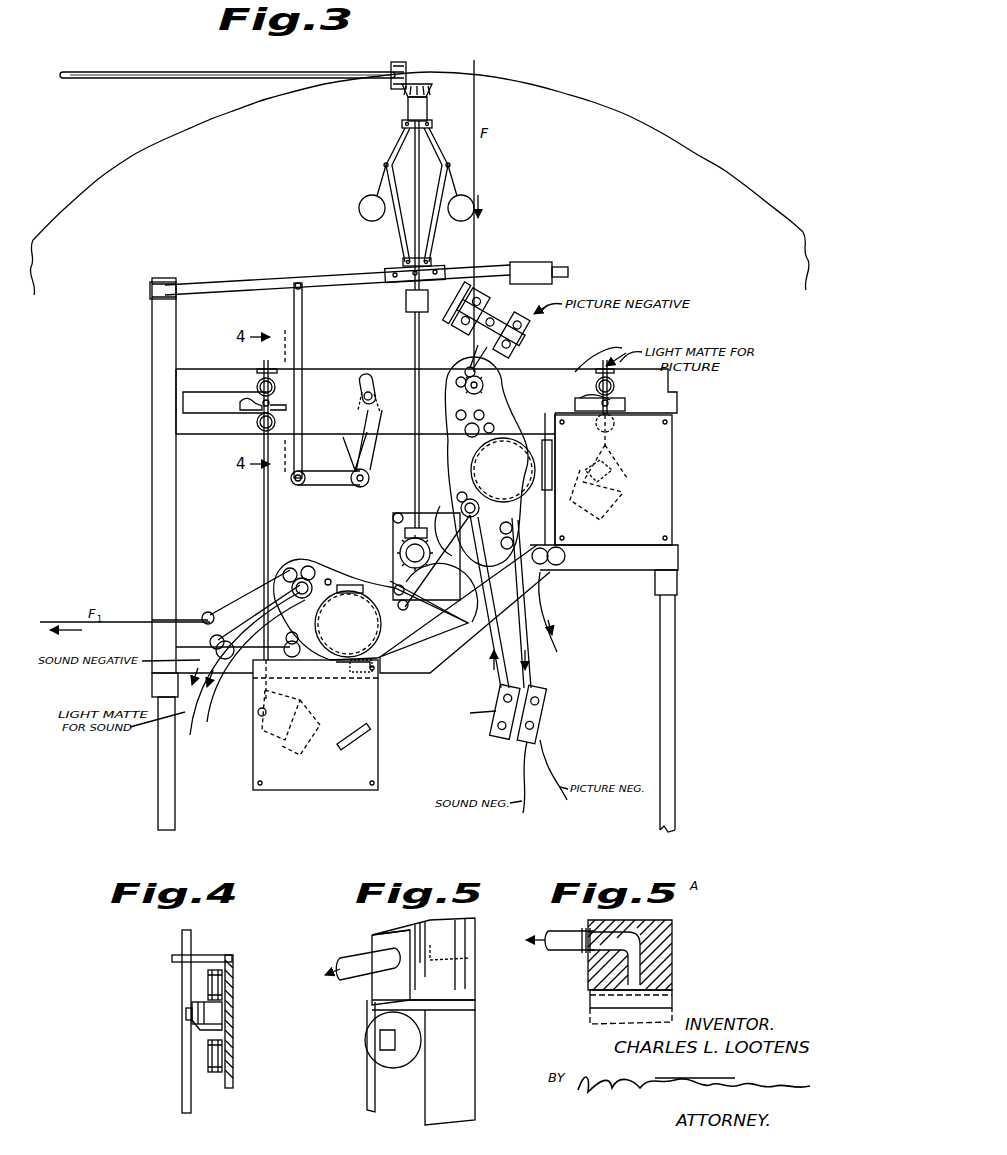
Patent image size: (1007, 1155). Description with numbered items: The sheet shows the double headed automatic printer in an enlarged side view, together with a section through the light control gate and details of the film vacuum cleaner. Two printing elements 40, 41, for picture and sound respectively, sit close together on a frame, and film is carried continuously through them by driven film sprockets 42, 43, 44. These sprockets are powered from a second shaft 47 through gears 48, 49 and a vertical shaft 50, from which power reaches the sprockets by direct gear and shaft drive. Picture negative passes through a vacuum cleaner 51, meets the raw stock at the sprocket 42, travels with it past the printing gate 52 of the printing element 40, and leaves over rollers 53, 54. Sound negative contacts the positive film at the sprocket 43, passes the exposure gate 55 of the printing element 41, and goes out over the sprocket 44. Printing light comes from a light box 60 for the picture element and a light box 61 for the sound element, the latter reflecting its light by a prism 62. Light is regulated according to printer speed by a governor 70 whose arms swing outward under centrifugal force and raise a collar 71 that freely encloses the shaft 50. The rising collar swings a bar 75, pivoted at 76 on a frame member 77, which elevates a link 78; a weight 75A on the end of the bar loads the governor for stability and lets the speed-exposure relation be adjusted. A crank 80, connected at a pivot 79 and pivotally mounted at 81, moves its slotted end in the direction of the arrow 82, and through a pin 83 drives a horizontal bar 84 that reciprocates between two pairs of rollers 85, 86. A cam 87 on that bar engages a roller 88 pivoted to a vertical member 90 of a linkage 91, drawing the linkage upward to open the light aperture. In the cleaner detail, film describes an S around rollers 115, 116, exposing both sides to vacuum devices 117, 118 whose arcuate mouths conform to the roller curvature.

In FIG. 3, the second shaft 47 is at (128, 72).
In FIG. 3, the gear 48 is at (408, 68).
In FIG. 3, the gear 49 is at (430, 90).
In FIG. 3, the governor 70 is at (392, 148).
In FIG. 3, the collar 71 is at (406, 301).
In FIG. 3, the bar 75 is at (295, 286).
In FIG. 3, the weight 75A is at (530, 262).
In FIG. 3, the pivot 76 is at (160, 293).
In FIG. 3, the frame member 77 is at (152, 375).
In FIG. 3, the link 78 is at (303, 322).
In FIG. 3, the pivot 79 is at (298, 486).
In FIG. 3, the crank 80 is at (327, 486).
In FIG. 3, the pivot 81 is at (362, 487).
In FIG. 3, the arrow 82 is at (352, 424).
In FIG. 3, the pin 83 is at (376, 395).
In FIG. 3, the horizontal bar 84 is at (395, 408).
In FIG. 4, the horizontal bar 84 is at (233, 1024).
In FIG. 3, the rollers 85 is at (257, 386).
In FIG. 4, the rollers 85 is at (208, 975).
In FIG. 3, the rollers 86 is at (257, 422).
In FIG. 4, the rollers 86 is at (212, 1072).
In FIG. 3, the cam 87 is at (240, 405).
In FIG. 4, the cam 87 is at (192, 1030).
In FIG. 3, the roller 88 is at (270, 402).
In FIG. 4, the roller 88 is at (192, 1002).
In FIG. 3, the vertical member 90 is at (264, 493).
In FIG. 4, the vertical member 90 is at (182, 1066).
In FIG. 3, the linkage 91 is at (622, 462).
In FIG. 3, the vertical shaft 50 is at (414, 341).
In FIG. 3, the vacuum cleaner 51 is at (496, 310).
In FIG. 3, the printing element 40 is at (497, 390).
In FIG. 3, the film sprocket 42 is at (500, 393).
In FIG. 3, the printing gate 52 is at (465, 462).
In FIG. 3, the roller 53 is at (512, 528).
In FIG. 3, the roller 54 is at (513, 543).
In FIG. 3, the exposure gate 55 is at (353, 588).
In FIG. 3, the printing element 41 is at (333, 570).
In FIG. 3, the film sprocket 43 is at (435, 567).
In FIG. 3, the film sprocket 44 is at (291, 637).
In FIG. 3, the light box 60 is at (672, 455).
In FIG. 3, the light box 61 is at (310, 780).
In FIG. 3, the prism 62 is at (358, 748).
In FIG. 3, the roller 115 is at (548, 692).
In FIG. 5, the roller 115 is at (372, 1025).
In FIG. 3, the roller 116 is at (546, 733).
In FIG. 3, the vacuum device 117 is at (512, 694).
In FIG. 5, the vacuum device 117 is at (472, 962).
In FIG. 5A, the vacuum device 117 is at (672, 955).
In FIG. 3, the vacuum device 118 is at (545, 722).